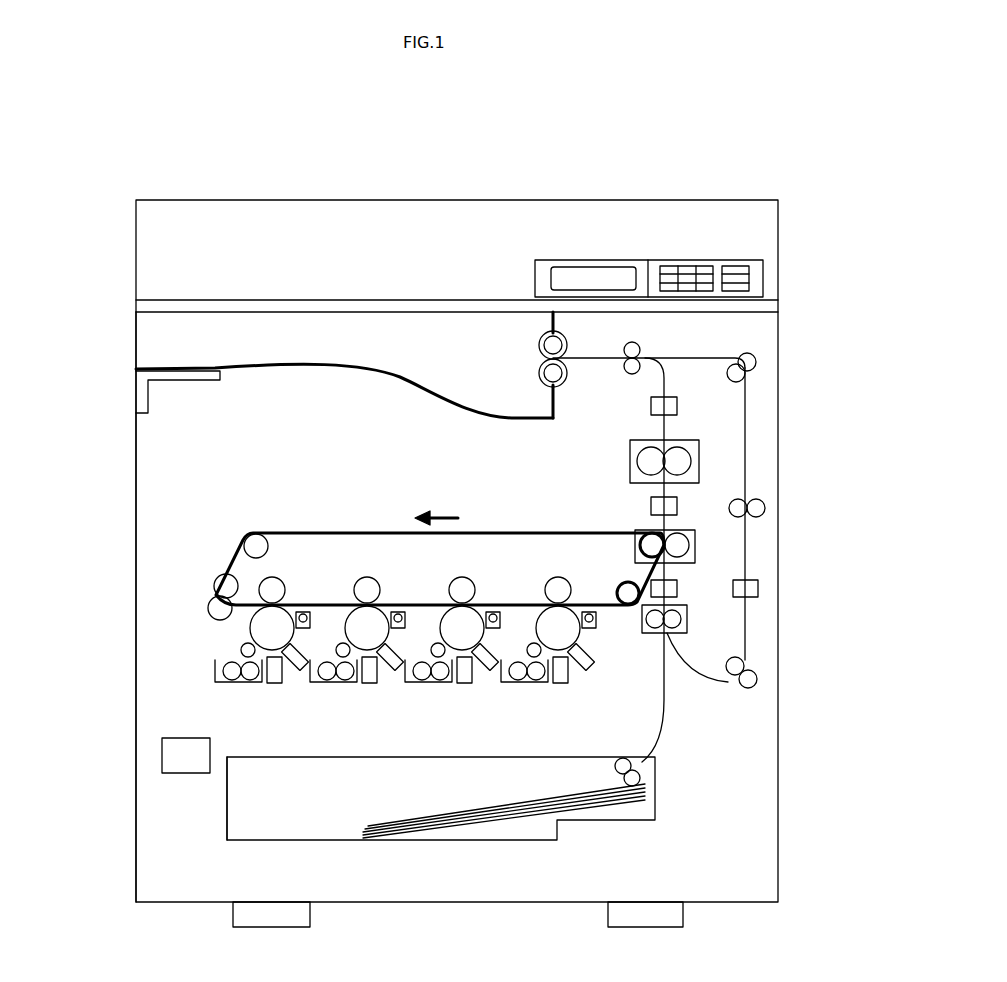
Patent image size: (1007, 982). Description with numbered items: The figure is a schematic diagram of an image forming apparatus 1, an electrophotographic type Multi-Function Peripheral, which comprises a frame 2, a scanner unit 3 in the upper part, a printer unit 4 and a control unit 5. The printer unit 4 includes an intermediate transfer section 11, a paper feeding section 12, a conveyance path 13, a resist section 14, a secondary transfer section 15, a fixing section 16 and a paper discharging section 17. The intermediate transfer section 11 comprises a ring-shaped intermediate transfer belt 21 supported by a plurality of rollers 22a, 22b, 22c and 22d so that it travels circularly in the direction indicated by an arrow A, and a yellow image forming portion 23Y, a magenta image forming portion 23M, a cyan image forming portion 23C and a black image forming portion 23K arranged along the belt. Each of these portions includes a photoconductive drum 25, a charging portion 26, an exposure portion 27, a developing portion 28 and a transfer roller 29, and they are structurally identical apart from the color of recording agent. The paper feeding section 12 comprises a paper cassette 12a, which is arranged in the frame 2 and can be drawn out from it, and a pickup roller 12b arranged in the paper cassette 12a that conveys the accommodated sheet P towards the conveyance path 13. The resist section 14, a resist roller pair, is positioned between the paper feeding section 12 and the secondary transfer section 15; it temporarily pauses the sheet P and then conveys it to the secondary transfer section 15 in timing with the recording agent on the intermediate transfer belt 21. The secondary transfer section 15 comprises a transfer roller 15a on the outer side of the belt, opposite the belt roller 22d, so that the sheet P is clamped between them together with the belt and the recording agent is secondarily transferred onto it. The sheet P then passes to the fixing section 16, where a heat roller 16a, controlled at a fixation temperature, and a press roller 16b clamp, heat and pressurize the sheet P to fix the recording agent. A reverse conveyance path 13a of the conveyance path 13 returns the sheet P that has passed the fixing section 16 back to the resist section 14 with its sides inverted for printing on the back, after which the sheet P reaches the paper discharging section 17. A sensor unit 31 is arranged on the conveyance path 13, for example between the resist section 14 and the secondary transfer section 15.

The image forming apparatus 1 is at (818, 184).
The frame 2 is at (781, 410).
The scanner unit 3 is at (133, 268).
The printer unit 4 is at (133, 516).
The control unit 5 is at (160, 755).
The intermediate transfer section 11 is at (411, 585).
The paper feeding section 12 is at (370, 775).
The paper cassette 12a is at (226, 822).
The pickup roller 12b is at (622, 758).
The conveyance path 13 is at (672, 698).
The reverse conveyance path 13a is at (752, 606).
The resist section 14 is at (690, 622).
The secondary transfer section 15 is at (729, 531).
The transfer roller 15a is at (729, 510).
The fixing section 16 is at (711, 444).
The heat roller 16a is at (648, 444).
The press roller 16b is at (684, 446).
The paper discharging section 17 is at (165, 366).
The intermediate transfer belt 21 is at (525, 530).
The roller 22a is at (247, 538).
The roller 22b is at (215, 577).
The roller 22c is at (622, 583).
The belt roller 22d is at (648, 533).
The yellow image forming portion 23Y is at (248, 597).
The magenta image forming portion 23M is at (385, 564).
The cyan image forming portion 23C is at (481, 564).
The black image forming portion 23K is at (572, 564).
The photoconductive drum 25 is at (250, 630).
The charging portion 26 is at (300, 680).
The exposure portion 27 is at (272, 688).
The developing portion 28 is at (228, 686).
The transfer roller 29 is at (286, 585).
The sensor unit 31 is at (676, 398).
The arrow A is at (438, 513).
The sheet P is at (476, 800).